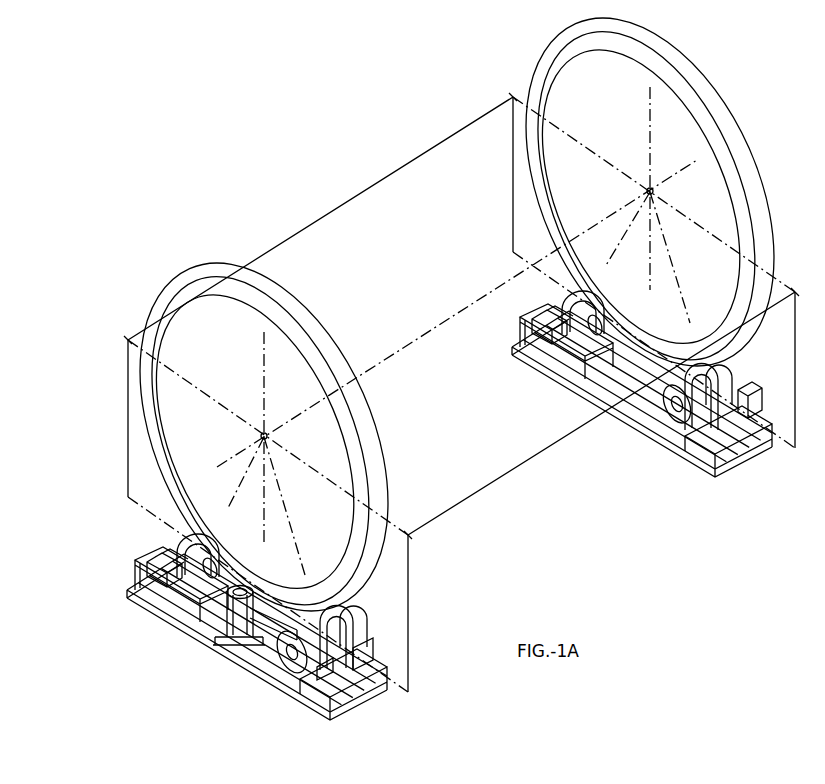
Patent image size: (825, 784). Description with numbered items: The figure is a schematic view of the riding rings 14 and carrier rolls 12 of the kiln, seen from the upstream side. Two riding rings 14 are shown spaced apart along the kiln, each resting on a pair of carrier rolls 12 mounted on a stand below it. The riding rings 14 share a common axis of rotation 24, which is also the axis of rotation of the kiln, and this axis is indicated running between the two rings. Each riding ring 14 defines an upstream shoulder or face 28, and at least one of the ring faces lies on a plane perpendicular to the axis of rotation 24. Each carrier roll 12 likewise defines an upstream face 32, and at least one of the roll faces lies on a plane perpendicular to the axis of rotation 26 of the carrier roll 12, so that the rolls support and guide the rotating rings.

The carrier roll 12 is at (732, 392).
The riding ring 14 is at (680, 62).
The axis of rotation of the riding rings 24 is at (462, 310).
The axis of rotation of the carrier roll 26 is at (538, 330).
The upstream shoulder or face 28 is at (552, 65).
The upstream face 32 is at (560, 277).